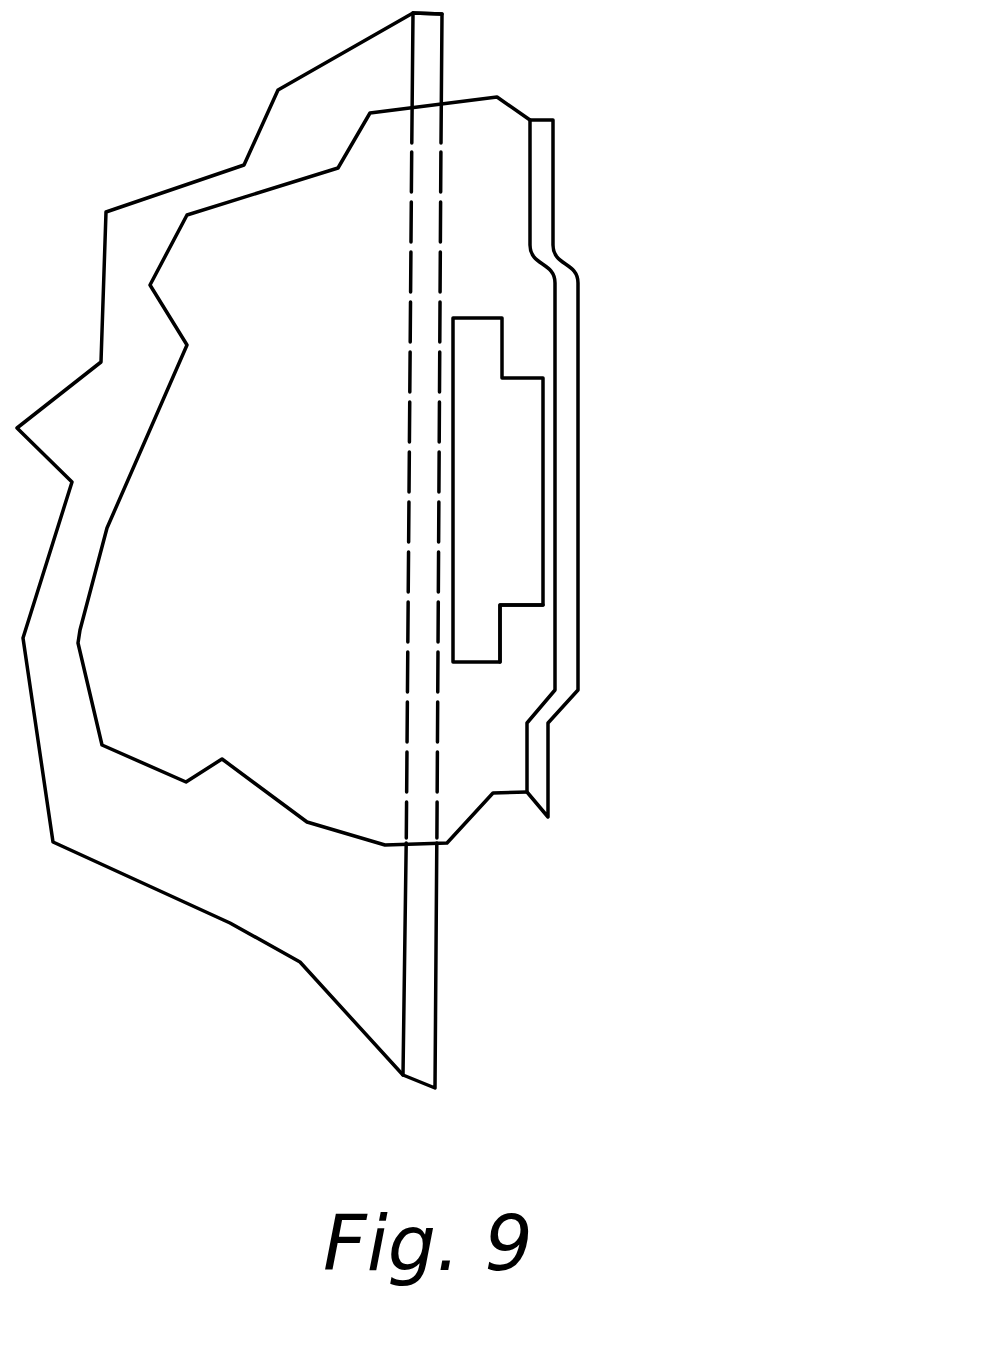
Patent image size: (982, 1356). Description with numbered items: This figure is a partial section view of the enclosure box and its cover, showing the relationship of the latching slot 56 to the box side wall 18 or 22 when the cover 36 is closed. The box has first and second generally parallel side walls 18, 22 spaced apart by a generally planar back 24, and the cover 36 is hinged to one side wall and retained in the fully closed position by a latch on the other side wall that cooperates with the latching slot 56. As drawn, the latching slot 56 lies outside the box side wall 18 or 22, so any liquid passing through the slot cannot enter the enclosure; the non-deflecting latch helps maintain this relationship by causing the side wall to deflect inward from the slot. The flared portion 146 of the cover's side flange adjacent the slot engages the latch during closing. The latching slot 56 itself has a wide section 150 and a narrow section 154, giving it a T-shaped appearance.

The first side wall 18 is at (435, 943).
The second side wall 22 is at (427, 13).
The back 24 is at (278, 880).
The cover 36 is at (302, 563).
The flared portion 146 is at (557, 345).
The latching slot 56 is at (557, 483).
The wide section 150 is at (470, 665).
The narrow section 154 is at (522, 610).